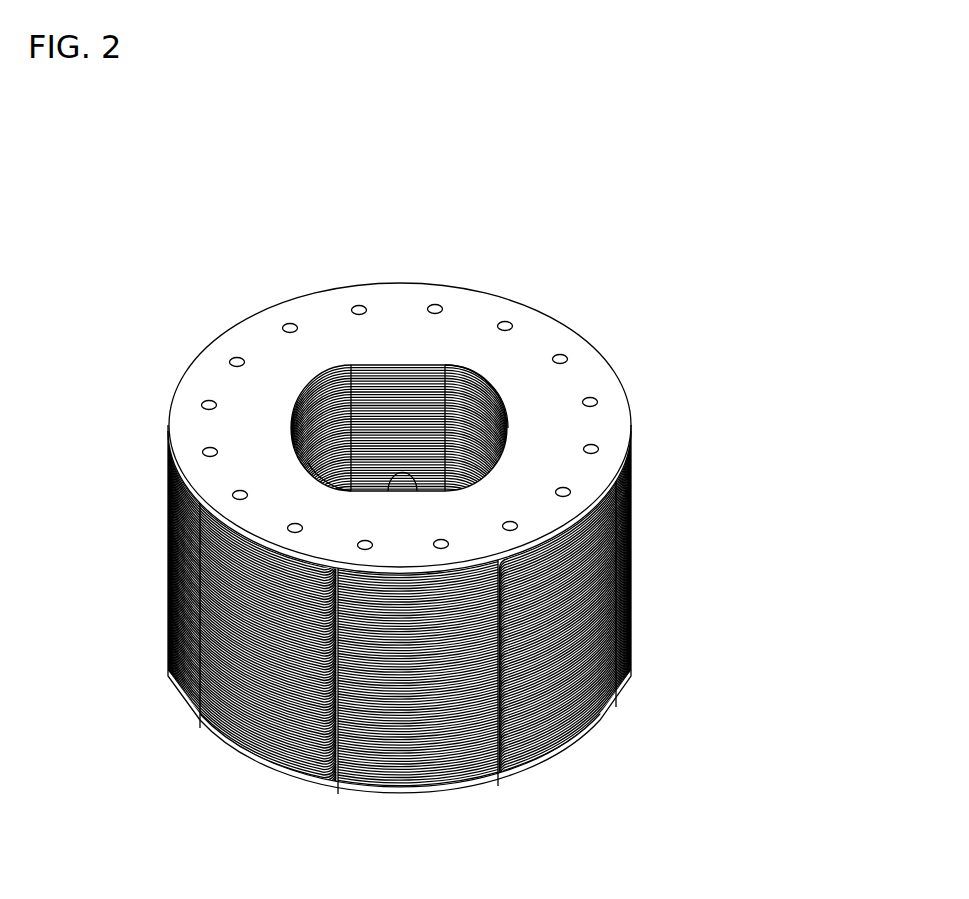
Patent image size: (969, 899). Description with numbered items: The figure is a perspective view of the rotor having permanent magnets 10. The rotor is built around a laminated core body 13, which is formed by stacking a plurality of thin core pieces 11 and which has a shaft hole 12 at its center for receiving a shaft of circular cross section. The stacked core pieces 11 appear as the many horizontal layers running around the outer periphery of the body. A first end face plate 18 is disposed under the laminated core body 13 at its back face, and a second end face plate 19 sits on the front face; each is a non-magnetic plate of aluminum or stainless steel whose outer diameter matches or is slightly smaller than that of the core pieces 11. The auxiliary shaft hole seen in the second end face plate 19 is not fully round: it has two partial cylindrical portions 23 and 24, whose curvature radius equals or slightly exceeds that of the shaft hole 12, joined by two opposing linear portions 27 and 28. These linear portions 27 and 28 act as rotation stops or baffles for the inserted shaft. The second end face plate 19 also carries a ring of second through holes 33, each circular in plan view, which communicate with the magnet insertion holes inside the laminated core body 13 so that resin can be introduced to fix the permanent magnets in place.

The rotor having permanent magnets 10 is at (612, 347).
The core pieces 11 is at (625, 527).
The shaft hole 12 is at (332, 412).
The laminated core body 13 is at (629, 595).
The first end face plate 18 is at (595, 718).
The second end face plate 19 is at (532, 330).
The partial cylindrical portion 23 is at (318, 472).
The partial cylindrical portion 24 is at (500, 432).
The linear portion 27 is at (408, 478).
The linear portion 28 is at (368, 360).
The second through holes 33 is at (427, 293).